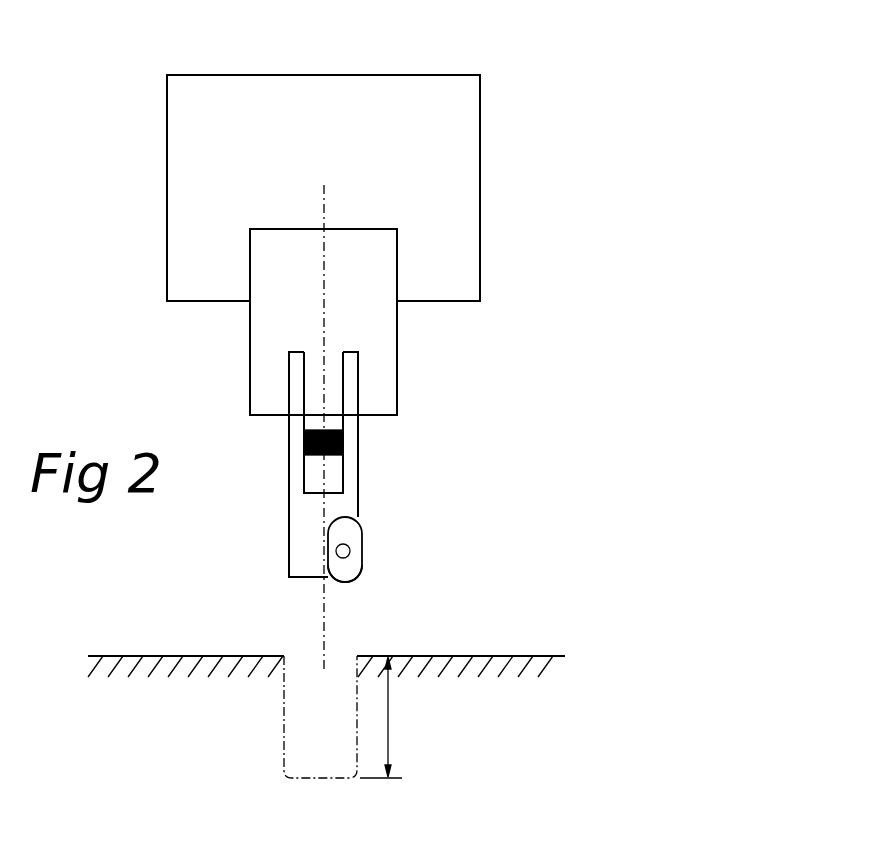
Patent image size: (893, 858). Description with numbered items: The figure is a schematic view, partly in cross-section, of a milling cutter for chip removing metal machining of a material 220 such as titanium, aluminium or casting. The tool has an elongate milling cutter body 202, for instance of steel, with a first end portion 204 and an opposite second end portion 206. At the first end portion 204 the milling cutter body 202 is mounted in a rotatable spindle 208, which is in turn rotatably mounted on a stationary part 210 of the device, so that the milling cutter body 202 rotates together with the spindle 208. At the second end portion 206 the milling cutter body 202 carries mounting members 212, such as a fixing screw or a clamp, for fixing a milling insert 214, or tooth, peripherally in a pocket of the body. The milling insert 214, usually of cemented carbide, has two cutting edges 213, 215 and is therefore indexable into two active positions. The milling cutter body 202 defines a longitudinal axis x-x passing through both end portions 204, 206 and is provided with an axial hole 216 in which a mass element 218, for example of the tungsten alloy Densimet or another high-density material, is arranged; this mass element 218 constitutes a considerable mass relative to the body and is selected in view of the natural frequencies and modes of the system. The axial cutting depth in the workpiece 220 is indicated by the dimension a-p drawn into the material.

The stationary part 210 is at (445, 146).
The rotatable spindle 208 is at (383, 347).
The second end portion 206 is at (288, 540).
The first end portion 204 is at (297, 363).
The milling cutter body 202 is at (362, 438).
The axial hole 216 is at (332, 362).
The mass element 218 is at (315, 443).
The cutting edge 215 is at (332, 511).
The mounting members 212 is at (347, 556).
The cutting edge 213 is at (363, 583).
The milling insert 214 is at (342, 578).
The material 220 is at (529, 726).